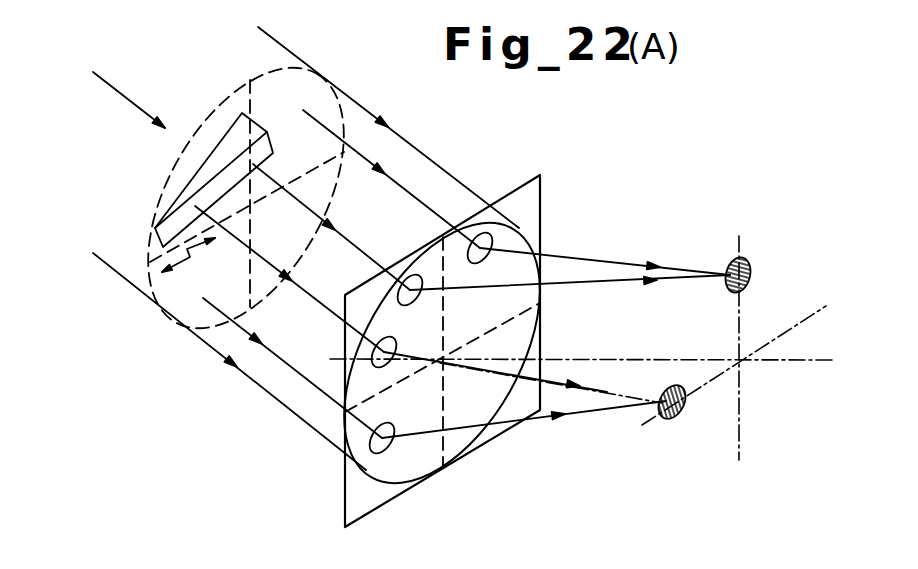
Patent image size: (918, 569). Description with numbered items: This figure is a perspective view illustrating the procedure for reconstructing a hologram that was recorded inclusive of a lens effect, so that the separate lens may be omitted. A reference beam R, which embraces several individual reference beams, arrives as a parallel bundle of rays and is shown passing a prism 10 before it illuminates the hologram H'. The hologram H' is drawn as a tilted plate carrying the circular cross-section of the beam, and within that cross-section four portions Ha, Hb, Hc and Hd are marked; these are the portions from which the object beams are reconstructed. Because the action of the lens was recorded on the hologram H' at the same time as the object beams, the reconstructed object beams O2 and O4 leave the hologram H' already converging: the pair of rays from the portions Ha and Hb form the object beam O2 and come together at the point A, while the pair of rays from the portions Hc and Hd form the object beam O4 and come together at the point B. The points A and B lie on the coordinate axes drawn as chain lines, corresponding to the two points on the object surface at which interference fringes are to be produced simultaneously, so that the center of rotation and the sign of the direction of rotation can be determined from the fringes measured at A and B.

The reference beam R is at (118, 89).
The prism (light deflecting element) 10 is at (227, 153).
The hologram H' is at (457, 341).
The aperture hole a Ha is at (493, 254).
The aperture hole b Hb is at (422, 299).
The aperture hole c Hc is at (397, 350).
The aperture hole d Hd is at (394, 447).
The object beam O2 is at (615, 282).
The object beam O4 is at (608, 392).
The point A is at (749, 272).
The point B is at (677, 409).